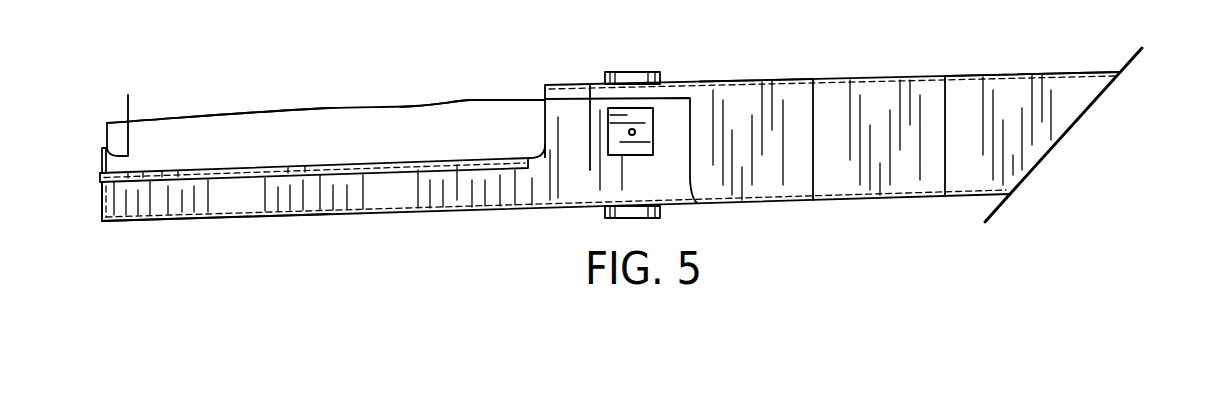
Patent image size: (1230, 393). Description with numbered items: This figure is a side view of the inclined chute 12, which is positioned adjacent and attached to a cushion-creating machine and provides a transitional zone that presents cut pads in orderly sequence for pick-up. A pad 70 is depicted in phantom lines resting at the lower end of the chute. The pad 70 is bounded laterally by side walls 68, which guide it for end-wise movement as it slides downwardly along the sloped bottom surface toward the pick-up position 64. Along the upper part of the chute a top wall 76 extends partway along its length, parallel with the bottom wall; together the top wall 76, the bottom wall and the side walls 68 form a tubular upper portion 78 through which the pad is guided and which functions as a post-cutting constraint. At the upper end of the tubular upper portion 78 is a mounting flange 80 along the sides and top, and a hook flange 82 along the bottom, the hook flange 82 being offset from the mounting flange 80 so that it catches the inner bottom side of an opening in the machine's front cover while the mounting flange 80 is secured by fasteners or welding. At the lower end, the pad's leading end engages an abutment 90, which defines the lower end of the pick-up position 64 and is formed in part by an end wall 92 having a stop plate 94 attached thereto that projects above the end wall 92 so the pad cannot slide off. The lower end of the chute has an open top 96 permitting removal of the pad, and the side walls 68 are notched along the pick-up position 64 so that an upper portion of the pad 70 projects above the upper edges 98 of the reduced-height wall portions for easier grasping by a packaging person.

The inclined chute 12 is at (860, 58).
The pick-up position 64 is at (314, 99).
The side walls 68 is at (765, 165).
The pad 70 is at (418, 106).
The top wall 76 is at (787, 81).
The tubular upper portion 78 is at (963, 69).
The mounting flange 80 is at (1131, 62).
The hook flange 82 is at (1000, 207).
The abutment 90 is at (99, 158).
The end wall 92 is at (100, 200).
The stop plate 94 is at (128, 95).
The open top 96 is at (373, 100).
The upper edges 98 is at (320, 148).